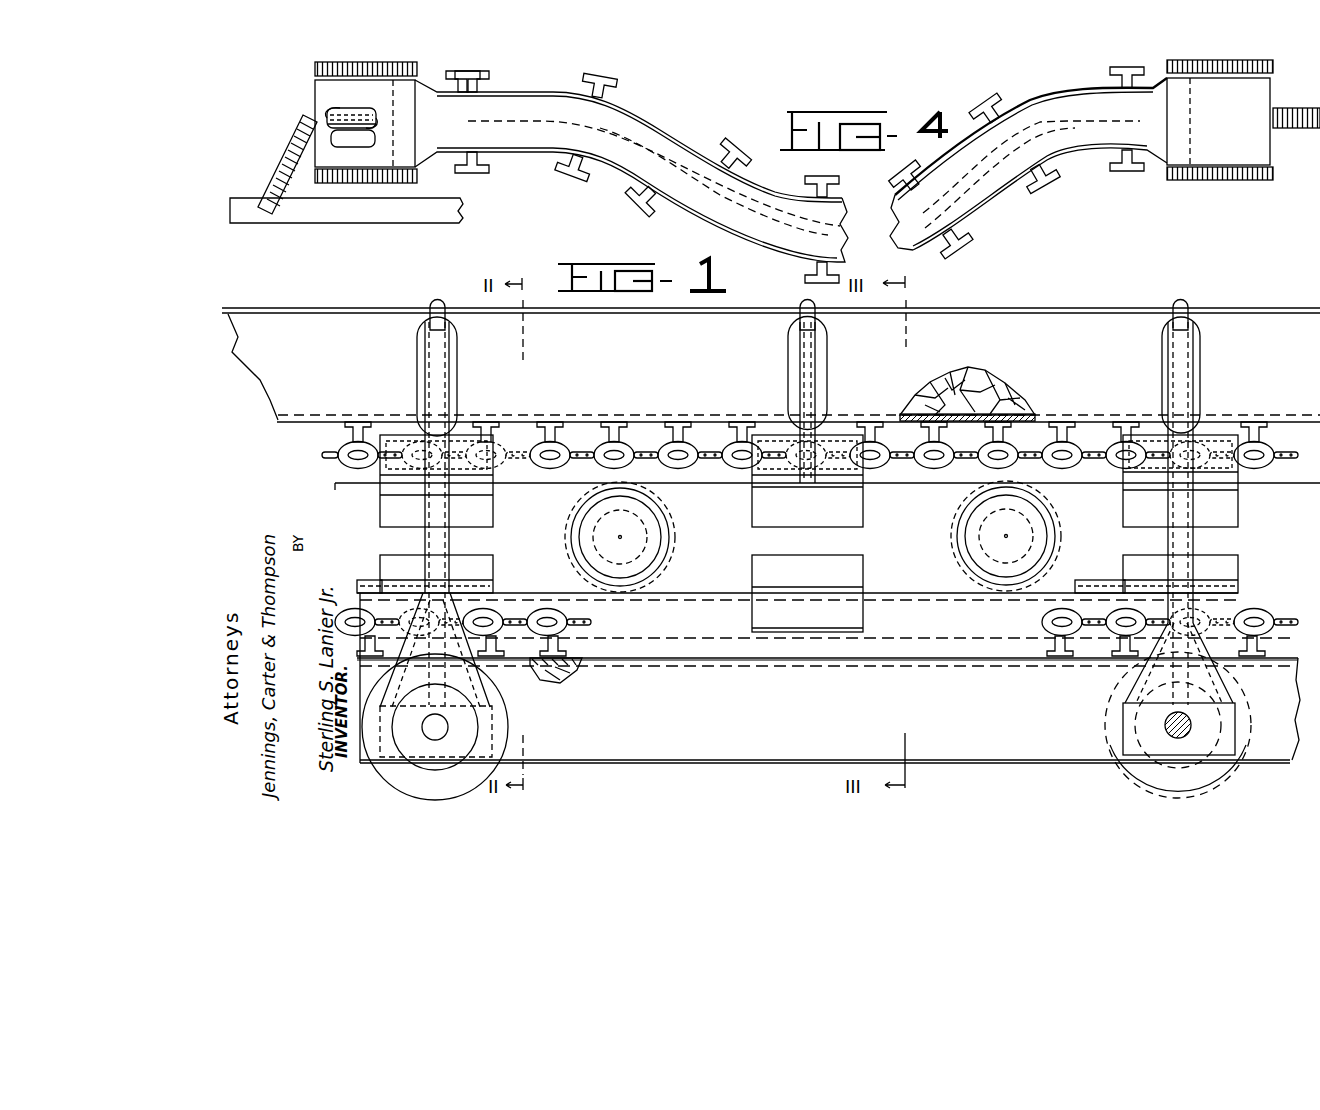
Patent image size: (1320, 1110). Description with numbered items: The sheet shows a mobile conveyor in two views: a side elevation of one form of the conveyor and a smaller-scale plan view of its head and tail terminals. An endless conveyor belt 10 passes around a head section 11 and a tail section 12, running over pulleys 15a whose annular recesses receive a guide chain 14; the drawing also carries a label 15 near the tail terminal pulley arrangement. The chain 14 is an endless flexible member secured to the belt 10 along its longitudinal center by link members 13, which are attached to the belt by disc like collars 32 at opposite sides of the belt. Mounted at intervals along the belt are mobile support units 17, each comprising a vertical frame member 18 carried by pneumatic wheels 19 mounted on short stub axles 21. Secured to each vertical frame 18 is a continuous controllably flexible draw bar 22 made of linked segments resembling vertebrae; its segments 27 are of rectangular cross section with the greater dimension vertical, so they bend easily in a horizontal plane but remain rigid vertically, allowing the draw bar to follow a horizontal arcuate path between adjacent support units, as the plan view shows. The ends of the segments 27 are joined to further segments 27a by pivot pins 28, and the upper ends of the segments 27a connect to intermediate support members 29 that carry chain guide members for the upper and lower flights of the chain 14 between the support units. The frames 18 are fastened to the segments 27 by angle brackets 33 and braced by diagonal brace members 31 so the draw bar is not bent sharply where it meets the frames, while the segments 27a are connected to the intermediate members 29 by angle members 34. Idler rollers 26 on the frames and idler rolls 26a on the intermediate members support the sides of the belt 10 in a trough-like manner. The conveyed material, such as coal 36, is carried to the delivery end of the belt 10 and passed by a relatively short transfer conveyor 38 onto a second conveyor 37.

In FIG. 4, the endless conveyor belt 10 is at (540, 152).
In FIG. 1, the endless conveyor belt 10 is at (1306, 318).
In FIG. 4, the head section 11 is at (1232, 55).
In FIG. 4, the tail section 12 is at (391, 54).
In FIG. 1, the link members 13 is at (645, 432).
In FIG. 4, the guide chain 14 is at (378, 122).
In FIG. 1, the guide chain 14 is at (930, 468).
In FIG. 4, the drive unit 15 is at (356, 142).
In FIG. 4, the pulleys 15a is at (352, 110).
In FIG. 1, the mobile support units 17 is at (459, 546).
In FIG. 1, the vertical frame members 18 is at (445, 512).
In FIG. 4, the wheels 19 is at (590, 76).
In FIG. 1, the wheels 19 is at (505, 730).
In FIG. 1, the stub axles 21 is at (448, 722).
In FIG. 4, the flexible draw bar 22 is at (551, 108).
In FIG. 1, the flexible draw bar 22 is at (341, 504).
In FIG. 1, the idler rollers 26 is at (458, 360).
In FIG. 1, the idler rolls 26a is at (828, 345).
In FIG. 1, the linked segments 27 is at (565, 582).
In FIG. 1, the segments 27a is at (918, 575).
In FIG. 4, the pivot pins 28 is at (660, 160).
In FIG. 1, the pivot pins 28 is at (645, 522).
In FIG. 1, the intermediate support members 29 is at (813, 389).
In FIG. 4, the diagonal brace members 31 is at (466, 88).
In FIG. 1, the diagonal brace members 31 is at (384, 566).
In FIG. 1, the disc like collars 32 is at (948, 415).
In FIG. 1, the angle brackets 33 is at (412, 565).
In FIG. 1, the angle members 34 is at (846, 523).
In FIG. 1, the coal 36 is at (985, 380).
In FIG. 4, the second conveyor 37 is at (450, 225).
In FIG. 4, the transfer conveyor 38 is at (292, 150).